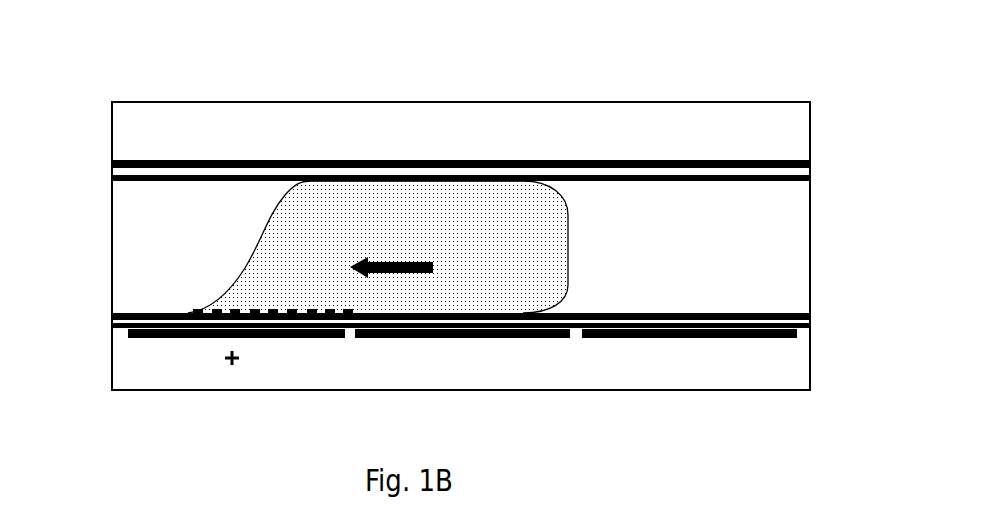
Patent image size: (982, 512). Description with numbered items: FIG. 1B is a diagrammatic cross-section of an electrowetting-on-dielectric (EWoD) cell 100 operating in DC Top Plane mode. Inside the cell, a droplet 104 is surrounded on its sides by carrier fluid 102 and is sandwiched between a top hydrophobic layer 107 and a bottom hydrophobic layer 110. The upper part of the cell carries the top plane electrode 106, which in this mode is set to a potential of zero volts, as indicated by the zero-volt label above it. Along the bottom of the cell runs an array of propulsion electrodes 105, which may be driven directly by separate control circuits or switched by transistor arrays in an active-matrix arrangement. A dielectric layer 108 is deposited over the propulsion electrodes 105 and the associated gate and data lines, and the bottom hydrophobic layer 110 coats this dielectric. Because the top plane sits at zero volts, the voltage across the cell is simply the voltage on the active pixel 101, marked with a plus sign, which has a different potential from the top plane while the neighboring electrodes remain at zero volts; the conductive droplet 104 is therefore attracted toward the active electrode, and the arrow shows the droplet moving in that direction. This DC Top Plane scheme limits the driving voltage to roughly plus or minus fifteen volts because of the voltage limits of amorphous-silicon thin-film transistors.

The electrowetting microfluidic device 100 is at (113, 86).
The pixel 101 is at (305, 340).
The carrier fluid 102 is at (720, 258).
The droplet 104 is at (520, 291).
The propulsion electrodes 105 is at (778, 338).
The top plane electrode 106 is at (777, 159).
The top hydrophobic layer 107 is at (812, 178).
The dielectric layer 108 is at (812, 326).
The bottom hydrophobic layer 110 is at (812, 320).